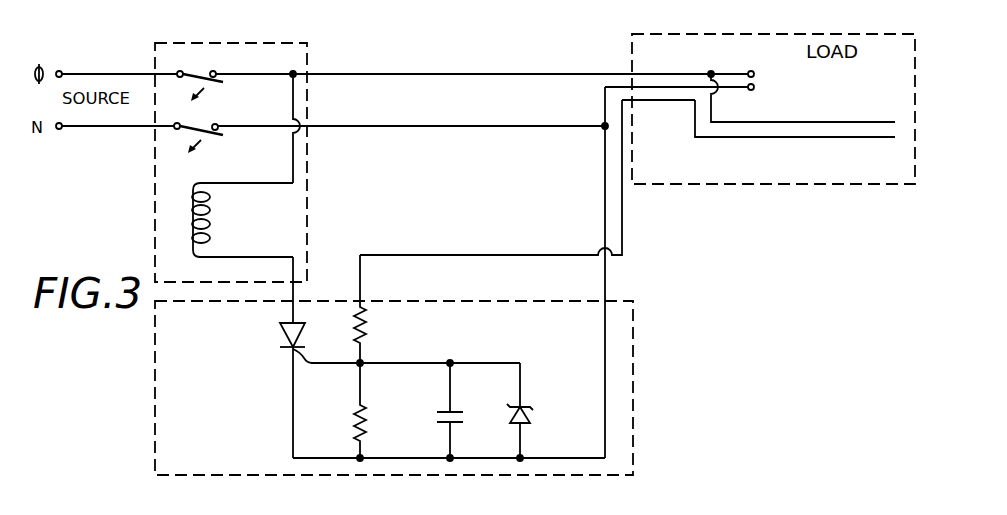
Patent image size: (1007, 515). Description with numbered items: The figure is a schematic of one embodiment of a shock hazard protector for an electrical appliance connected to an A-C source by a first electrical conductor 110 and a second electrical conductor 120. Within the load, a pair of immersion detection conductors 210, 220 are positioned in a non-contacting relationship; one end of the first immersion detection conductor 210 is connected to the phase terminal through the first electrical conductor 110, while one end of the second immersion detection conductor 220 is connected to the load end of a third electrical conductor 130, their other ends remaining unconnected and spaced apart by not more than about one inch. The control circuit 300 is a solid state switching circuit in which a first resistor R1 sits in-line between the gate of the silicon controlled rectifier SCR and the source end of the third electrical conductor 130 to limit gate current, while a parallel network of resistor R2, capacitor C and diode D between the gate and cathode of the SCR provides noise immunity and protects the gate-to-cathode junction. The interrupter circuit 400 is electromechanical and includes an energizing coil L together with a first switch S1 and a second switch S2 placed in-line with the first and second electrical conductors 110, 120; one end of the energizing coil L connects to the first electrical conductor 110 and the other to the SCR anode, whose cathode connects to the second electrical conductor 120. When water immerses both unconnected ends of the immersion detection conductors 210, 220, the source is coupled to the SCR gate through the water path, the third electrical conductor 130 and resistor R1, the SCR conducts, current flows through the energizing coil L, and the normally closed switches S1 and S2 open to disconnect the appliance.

The interrupter circuit 400 is at (251, 42).
The first electrical conductor 110 is at (471, 72).
The second electrical conductor 120 is at (478, 125).
The third electrical conductor 130 is at (657, 103).
The first immersion detection conductor 210 is at (829, 122).
The second immersion detection conductor 220 is at (838, 138).
The control circuit 300 is at (635, 410).
The first switch S1 is at (200, 74).
The second switch S2 is at (198, 128).
The energizing coil L is at (229, 220).
The silicon controlled rectifier SCR is at (274, 390).
The first resistor R1 is at (376, 309).
The resistor R2 is at (348, 410).
The capacitor C is at (436, 417).
The diode D is at (533, 415).